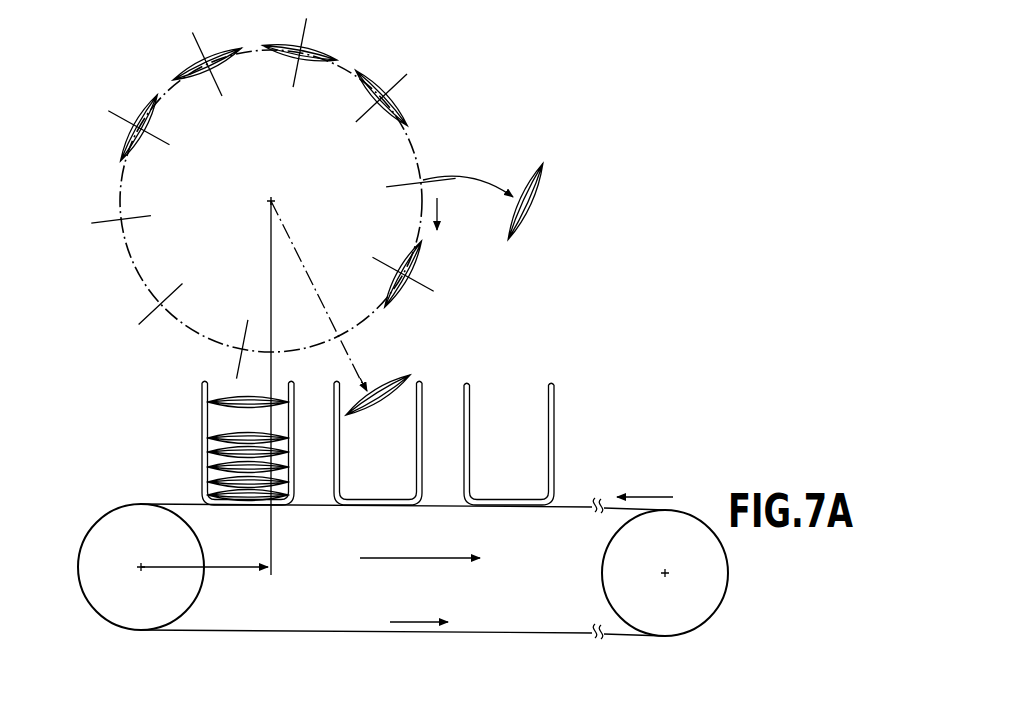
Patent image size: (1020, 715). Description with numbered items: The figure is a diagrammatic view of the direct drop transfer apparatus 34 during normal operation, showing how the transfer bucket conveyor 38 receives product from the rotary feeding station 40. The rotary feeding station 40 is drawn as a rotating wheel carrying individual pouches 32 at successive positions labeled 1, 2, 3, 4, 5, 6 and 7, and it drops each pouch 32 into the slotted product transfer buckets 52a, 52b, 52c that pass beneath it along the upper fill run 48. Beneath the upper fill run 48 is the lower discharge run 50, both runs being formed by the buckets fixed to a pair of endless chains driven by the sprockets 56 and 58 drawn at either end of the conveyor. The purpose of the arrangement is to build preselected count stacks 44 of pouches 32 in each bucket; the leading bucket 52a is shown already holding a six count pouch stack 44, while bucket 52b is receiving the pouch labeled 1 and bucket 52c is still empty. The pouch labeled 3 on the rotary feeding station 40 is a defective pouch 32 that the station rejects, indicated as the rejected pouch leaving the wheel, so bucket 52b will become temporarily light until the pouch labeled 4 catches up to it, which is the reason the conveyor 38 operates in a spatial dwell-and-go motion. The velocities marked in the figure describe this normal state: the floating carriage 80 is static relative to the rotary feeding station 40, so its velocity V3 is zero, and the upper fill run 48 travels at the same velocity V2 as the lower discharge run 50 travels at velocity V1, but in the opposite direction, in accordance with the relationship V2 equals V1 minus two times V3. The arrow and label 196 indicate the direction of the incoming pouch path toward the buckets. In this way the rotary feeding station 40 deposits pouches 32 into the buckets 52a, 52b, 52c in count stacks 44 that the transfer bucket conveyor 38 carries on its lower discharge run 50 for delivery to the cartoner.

The rotary feeding station 40 is at (273, 176).
The pouch 32 is at (313, 41).
The station 1 is at (384, 383).
The station 2 is at (405, 274).
The pouch labeled 3 is at (421, 188).
The pouch labeled 4 is at (381, 98).
The station 5 is at (290, 52).
The station 6 is at (193, 64).
The station 7 is at (134, 131).
The pouch transfer path 196 is at (480, 343).
The preselected count stack 44 is at (226, 392).
The upper fill run 48 is at (351, 428).
The leading product transfer bucket 52a is at (202, 480).
The light product transfer bucket 52b is at (425, 398).
The product transfer bucket 52c is at (554, 430).
The lower discharge run 50 is at (412, 571).
The transfer bucket conveyor 38 is at (722, 610).
The sprocket 56 is at (85, 530).
The sprocket 58 is at (727, 585).
The floating carriage 80 is at (527, 583).
The direct drop transfer apparatus 34 is at (716, 305).